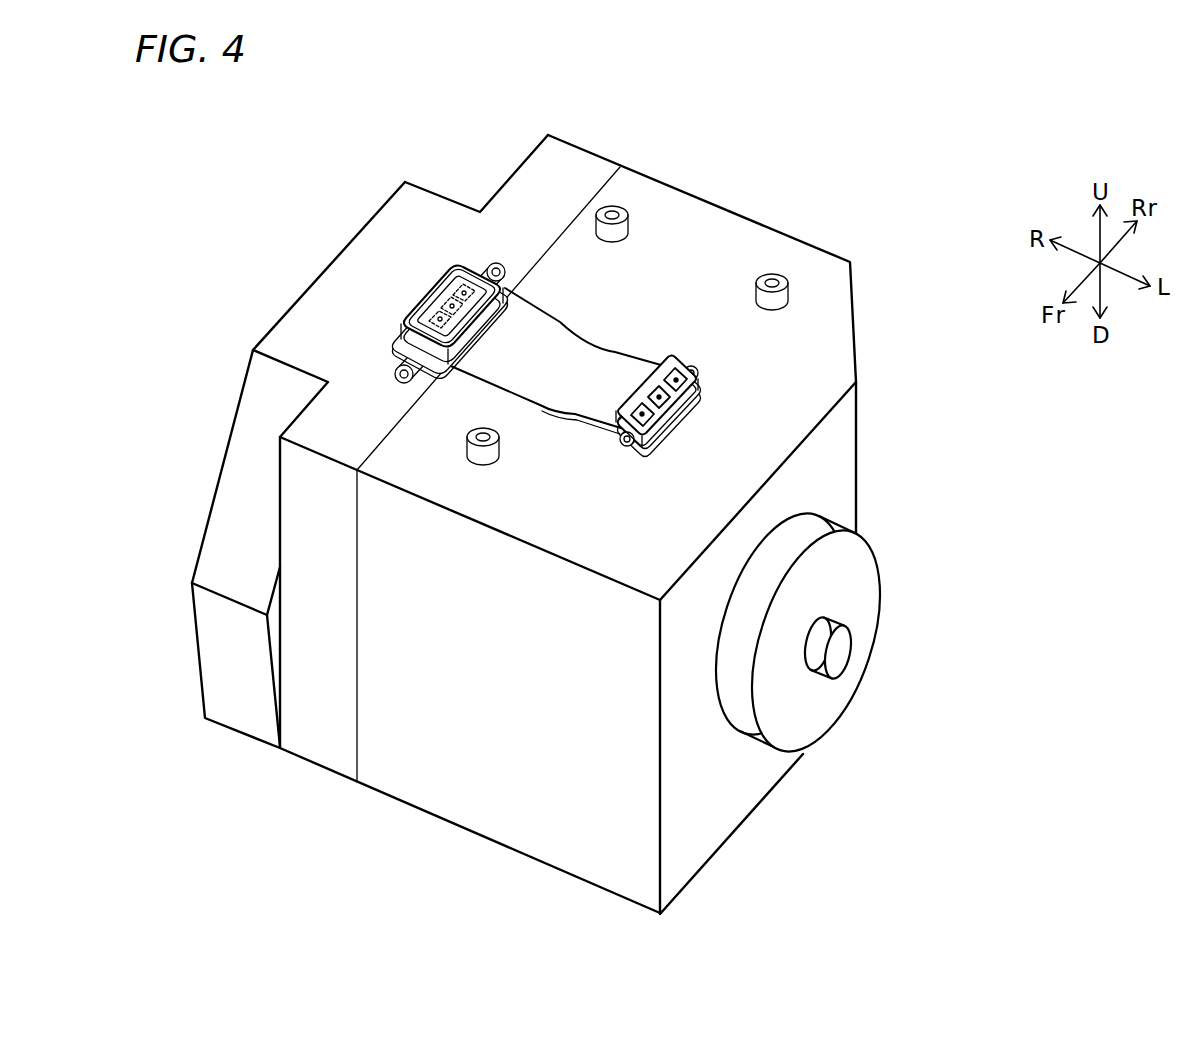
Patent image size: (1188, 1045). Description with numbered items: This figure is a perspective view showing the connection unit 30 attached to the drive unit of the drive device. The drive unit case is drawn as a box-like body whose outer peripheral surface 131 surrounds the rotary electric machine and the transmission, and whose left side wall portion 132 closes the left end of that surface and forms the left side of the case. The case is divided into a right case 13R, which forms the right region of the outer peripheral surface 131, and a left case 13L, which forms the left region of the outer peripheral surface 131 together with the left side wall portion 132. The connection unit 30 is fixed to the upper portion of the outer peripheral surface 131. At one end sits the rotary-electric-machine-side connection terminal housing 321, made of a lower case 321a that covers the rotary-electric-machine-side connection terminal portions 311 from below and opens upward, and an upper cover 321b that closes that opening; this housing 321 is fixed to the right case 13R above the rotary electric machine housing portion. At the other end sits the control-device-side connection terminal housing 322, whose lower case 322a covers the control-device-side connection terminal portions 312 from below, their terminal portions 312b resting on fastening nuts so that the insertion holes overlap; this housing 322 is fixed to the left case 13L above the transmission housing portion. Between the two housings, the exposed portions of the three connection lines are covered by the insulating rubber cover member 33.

The connection unit 30 is at (595, 310).
The cover member 33 is at (568, 390).
The rotary-electric-machine-side connection terminal portion 311 is at (447, 330).
The terminal portion 312b is at (640, 392).
The control-device-side connection terminal portion 312 is at (728, 299).
The rotary-electric-machine-side connection terminal housing 321 is at (346, 257).
The lower case 321a is at (390, 343).
The upper cover 321b is at (371, 247).
The control-device-side connection terminal housing 322 is at (779, 304).
The lower case 322a is at (693, 410).
The outer peripheral surface 131 is at (590, 462).
The left side wall portion 132 is at (863, 588).
The right case 13R is at (345, 690).
The left case 13L is at (717, 810).